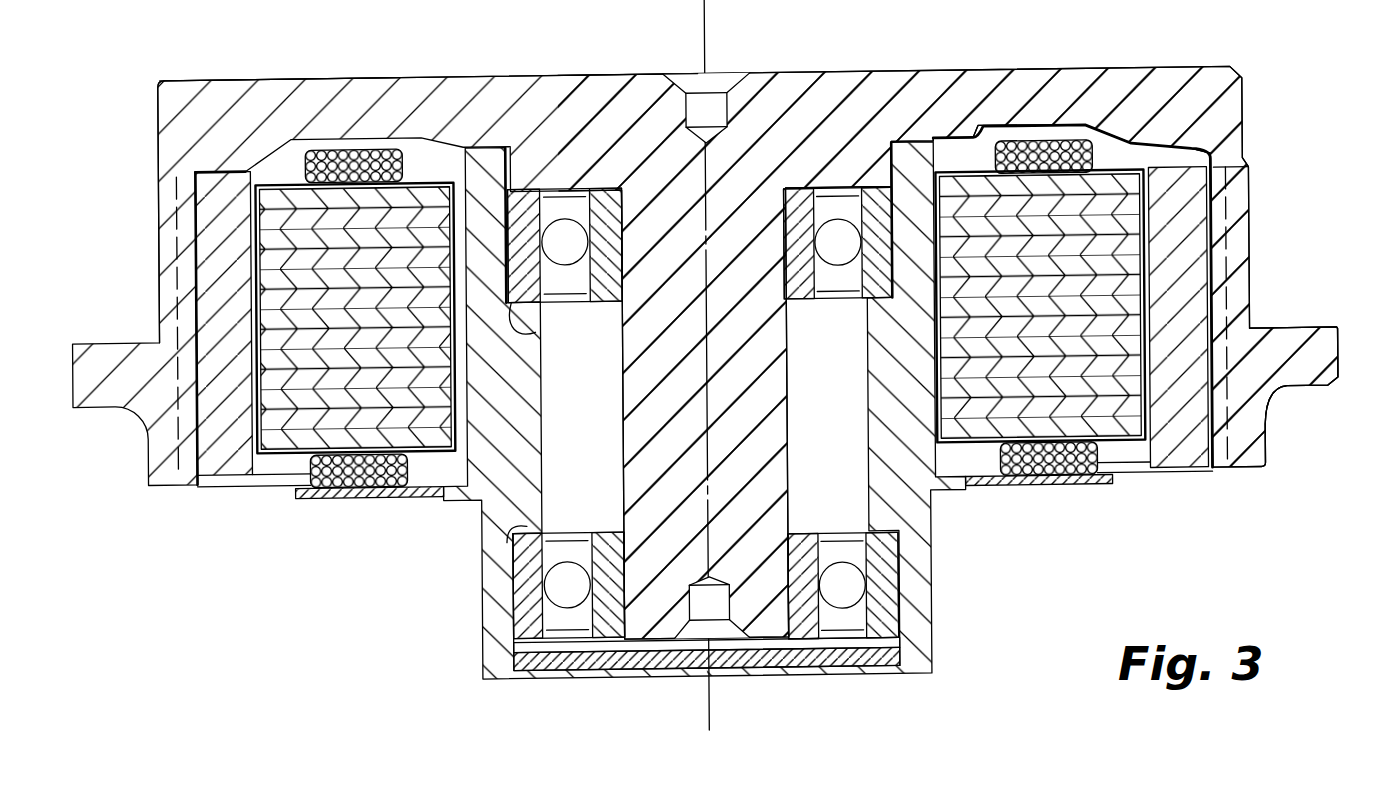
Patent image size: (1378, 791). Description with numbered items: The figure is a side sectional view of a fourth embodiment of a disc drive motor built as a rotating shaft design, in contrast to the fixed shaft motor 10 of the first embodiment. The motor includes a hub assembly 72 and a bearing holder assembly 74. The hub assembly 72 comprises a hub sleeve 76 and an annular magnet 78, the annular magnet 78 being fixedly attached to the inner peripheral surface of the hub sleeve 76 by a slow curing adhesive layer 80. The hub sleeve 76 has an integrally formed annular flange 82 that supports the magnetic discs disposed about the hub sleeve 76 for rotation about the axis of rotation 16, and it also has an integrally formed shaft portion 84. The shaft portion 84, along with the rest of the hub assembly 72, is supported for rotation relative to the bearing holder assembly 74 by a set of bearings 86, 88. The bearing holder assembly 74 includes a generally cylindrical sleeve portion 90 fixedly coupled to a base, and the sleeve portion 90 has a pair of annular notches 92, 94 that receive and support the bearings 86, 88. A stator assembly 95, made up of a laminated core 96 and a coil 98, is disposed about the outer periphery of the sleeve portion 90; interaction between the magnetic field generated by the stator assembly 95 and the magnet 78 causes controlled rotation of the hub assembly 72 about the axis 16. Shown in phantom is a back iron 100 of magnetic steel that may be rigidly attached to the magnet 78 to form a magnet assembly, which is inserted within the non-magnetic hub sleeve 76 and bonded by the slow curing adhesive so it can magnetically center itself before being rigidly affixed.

The motor 10 is at (147, 140).
The axis of rotation 16 is at (706, 46).
The hub assembly 72 is at (1073, 67).
The bearing holder assembly 74 is at (934, 545).
The hub sleeve 76 is at (283, 81).
The annular magnet 78 is at (218, 435).
The adhesive layer 80 is at (197, 487).
The annular flange 82 is at (1287, 372).
The shaft portion 84 is at (743, 567).
The bearing 86 is at (877, 217).
The bearing 88 is at (873, 588).
The sleeve portion 90 is at (470, 498).
The annular notch 92 is at (490, 530).
The annular notch 94 is at (513, 312).
The stator assembly 95 is at (327, 160).
The laminated core 96 is at (418, 190).
The coil 98 is at (350, 473).
The back iron 100 is at (1233, 427).